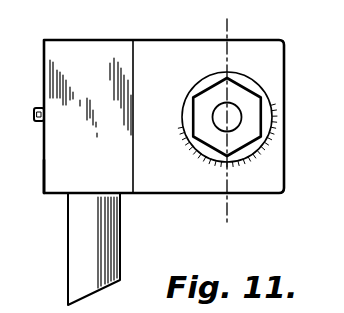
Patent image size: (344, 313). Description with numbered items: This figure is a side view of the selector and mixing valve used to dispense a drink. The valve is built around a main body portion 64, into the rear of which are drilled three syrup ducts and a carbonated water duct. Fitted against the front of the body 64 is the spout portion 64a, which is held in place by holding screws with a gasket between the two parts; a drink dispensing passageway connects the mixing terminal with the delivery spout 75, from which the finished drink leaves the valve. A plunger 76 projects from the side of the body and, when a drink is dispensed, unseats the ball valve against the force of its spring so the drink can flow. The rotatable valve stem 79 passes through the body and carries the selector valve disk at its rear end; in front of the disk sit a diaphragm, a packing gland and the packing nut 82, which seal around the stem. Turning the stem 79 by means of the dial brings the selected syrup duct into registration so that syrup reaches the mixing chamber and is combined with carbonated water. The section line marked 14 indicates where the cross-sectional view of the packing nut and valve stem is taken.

The section line for Fig. 14 is at (201, 19).
The main body portion 64 is at (272, 180).
The spout portion 64a is at (53, 172).
The delivery spout 75 is at (105, 238).
The plunger 76 is at (38, 122).
The valve stem 79 is at (232, 117).
The packing nut 82 is at (246, 100).